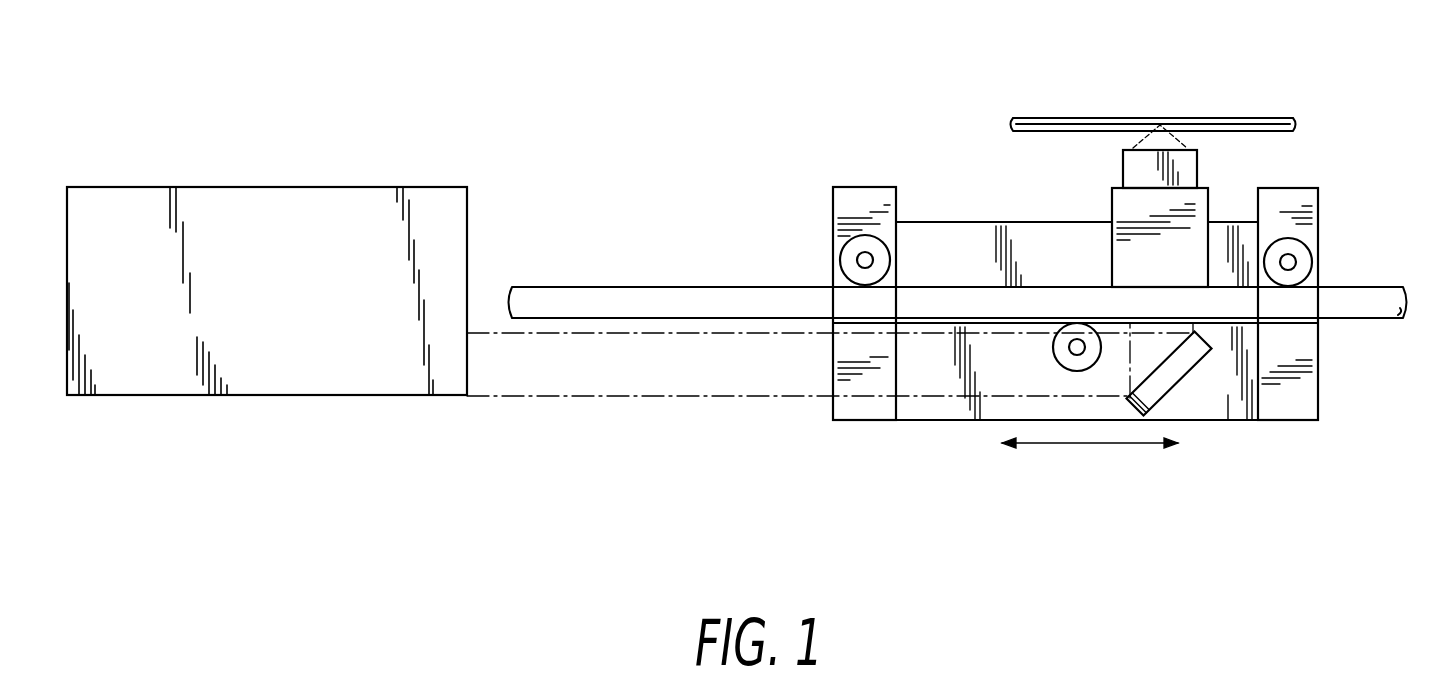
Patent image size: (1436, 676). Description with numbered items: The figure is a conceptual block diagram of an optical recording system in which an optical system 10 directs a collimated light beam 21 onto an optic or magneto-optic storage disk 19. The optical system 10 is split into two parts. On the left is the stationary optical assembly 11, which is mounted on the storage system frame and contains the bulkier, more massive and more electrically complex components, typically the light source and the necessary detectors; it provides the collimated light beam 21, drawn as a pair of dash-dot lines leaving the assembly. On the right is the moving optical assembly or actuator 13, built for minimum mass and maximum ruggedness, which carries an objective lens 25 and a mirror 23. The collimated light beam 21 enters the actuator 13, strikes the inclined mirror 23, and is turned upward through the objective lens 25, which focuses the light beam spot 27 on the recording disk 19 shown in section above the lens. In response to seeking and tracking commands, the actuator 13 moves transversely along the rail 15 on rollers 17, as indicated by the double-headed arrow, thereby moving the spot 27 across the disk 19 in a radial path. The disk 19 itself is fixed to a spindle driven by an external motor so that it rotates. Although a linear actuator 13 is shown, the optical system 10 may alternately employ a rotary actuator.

The optical system 10 is at (855, 485).
The stationary optical assembly 11 is at (316, 200).
The moving optical assembly 13 is at (1242, 412).
The rail 15 is at (1380, 323).
The rollers 17 is at (1298, 252).
The storage disk 19 is at (1290, 123).
The collimated light beam 21 is at (645, 382).
The mirror 23 is at (1192, 388).
The objective lens 25 is at (1132, 168).
The light beam spot 27 is at (1160, 124).